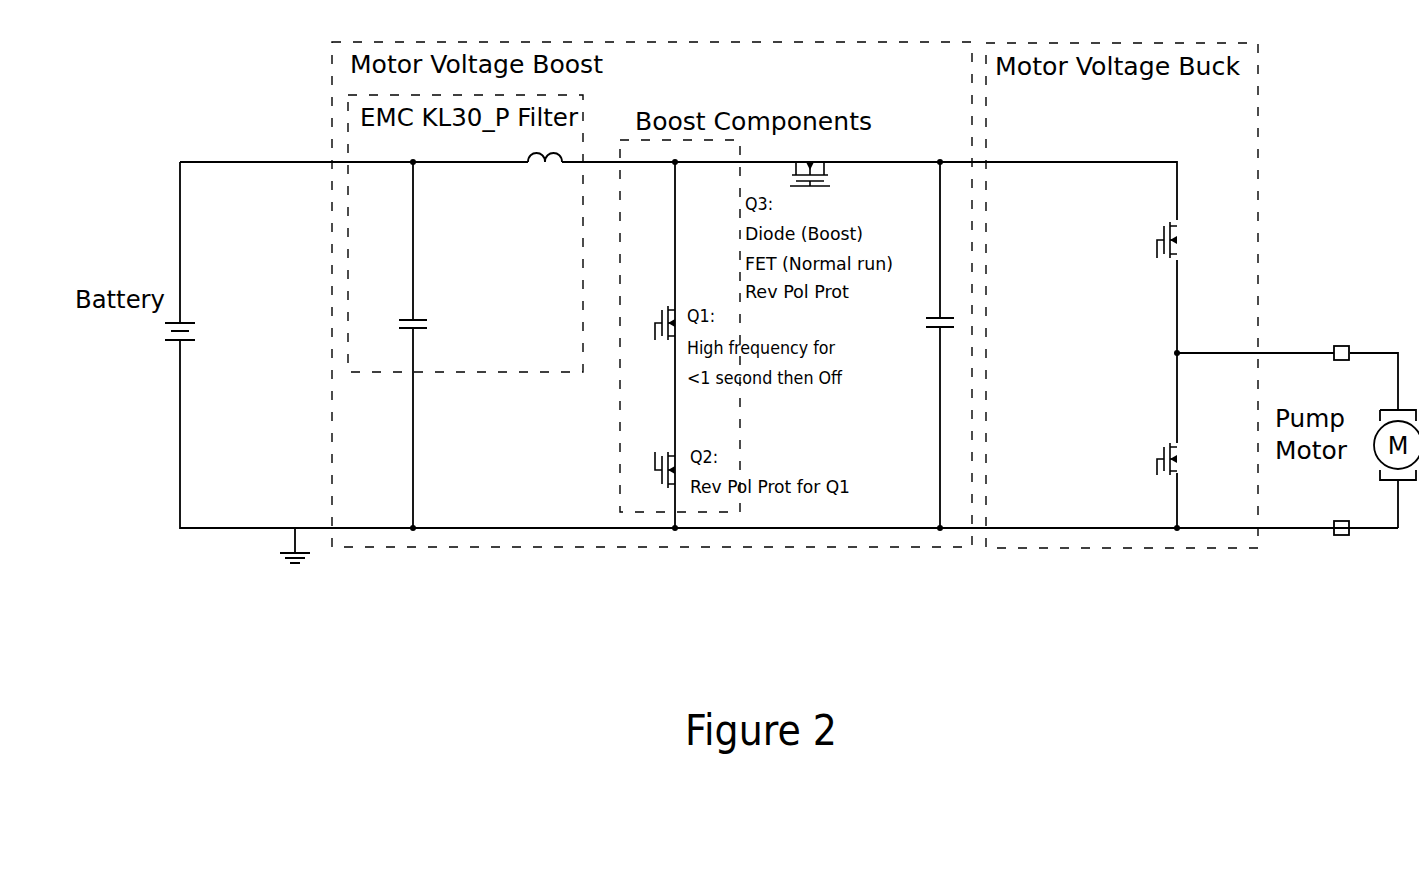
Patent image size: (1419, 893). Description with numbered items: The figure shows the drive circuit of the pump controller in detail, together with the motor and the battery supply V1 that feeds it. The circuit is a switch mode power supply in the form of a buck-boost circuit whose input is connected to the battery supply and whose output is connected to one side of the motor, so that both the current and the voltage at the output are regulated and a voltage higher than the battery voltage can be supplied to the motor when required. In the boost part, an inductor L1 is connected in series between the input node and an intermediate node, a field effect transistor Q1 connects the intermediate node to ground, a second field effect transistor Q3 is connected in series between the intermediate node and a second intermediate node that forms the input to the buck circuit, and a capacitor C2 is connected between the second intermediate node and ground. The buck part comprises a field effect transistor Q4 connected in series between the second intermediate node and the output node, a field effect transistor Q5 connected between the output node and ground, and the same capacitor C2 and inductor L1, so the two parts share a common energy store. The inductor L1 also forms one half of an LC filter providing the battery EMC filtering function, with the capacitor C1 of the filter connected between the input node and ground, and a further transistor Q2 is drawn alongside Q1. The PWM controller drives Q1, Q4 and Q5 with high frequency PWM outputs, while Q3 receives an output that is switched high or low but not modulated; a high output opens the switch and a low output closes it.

The battery V1 is at (193, 320).
The capacitor C1 is at (401, 345).
The inductor L1 is at (545, 174).
The field effect transistor Q1 is at (657, 345).
The reverse polarity protection FET for Q1 Q2 is at (656, 457).
The field effect transistor Q3 is at (826, 177).
The capacitor C2 is at (928, 345).
The field effect transistor Q4 is at (1157, 254).
The field effect transistor Q5 is at (1157, 472).